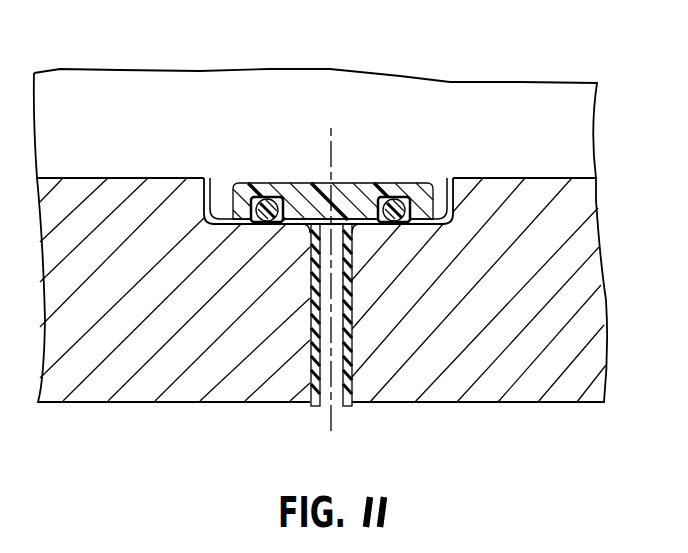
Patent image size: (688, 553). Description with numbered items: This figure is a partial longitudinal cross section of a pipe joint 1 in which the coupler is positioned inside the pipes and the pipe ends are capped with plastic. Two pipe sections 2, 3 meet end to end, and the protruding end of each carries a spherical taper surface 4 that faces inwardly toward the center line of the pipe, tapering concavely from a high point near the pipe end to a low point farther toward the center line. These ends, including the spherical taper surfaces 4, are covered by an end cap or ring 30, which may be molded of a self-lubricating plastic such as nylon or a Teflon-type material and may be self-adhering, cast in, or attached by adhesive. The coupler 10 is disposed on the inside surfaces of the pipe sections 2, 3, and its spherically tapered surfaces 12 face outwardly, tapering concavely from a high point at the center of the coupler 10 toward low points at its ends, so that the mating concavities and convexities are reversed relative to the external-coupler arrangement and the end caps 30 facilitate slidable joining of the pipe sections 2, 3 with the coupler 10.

The pipe joint 1 is at (455, 92).
The pipe section 2 is at (163, 193).
The pipe section 3 is at (518, 188).
The spherical taper surface 4 is at (401, 235).
The coupler 10 is at (360, 192).
The spherically tapered surface 12 is at (346, 242).
The end cap or ring 30 is at (320, 408).